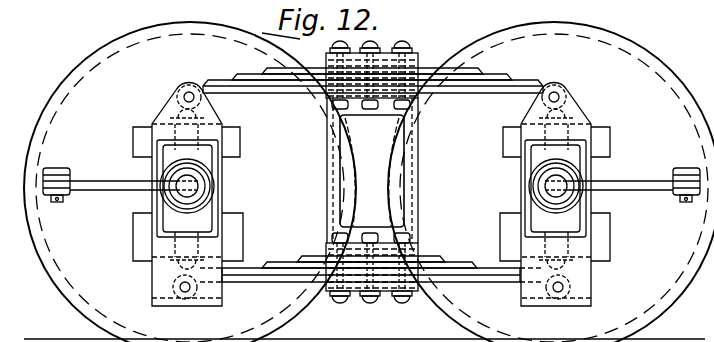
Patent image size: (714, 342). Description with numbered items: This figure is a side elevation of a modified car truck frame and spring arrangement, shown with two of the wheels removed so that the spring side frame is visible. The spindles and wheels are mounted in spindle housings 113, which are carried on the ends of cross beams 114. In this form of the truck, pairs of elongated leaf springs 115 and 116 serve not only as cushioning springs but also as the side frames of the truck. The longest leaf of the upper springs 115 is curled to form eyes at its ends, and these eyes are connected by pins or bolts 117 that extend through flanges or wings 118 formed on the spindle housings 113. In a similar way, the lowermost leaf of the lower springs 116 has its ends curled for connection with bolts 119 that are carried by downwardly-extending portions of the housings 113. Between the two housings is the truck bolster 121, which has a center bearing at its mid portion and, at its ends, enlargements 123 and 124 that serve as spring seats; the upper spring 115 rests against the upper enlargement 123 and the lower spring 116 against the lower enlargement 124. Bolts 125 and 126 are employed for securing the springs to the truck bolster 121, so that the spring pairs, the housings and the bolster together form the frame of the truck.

The spindle housing 113 is at (157, 137).
The cross beam 114 is at (150, 168).
The leaf spring 115 is at (289, 88).
The leaf spring 116 is at (280, 266).
The pin or bolt 117 is at (177, 92).
The flange or wing 118 is at (172, 106).
The bolt 119 is at (180, 287).
The truck bolster 121 is at (407, 178).
The enlargement 123 is at (413, 84).
The enlargement 124 is at (412, 260).
The bolt 125 is at (378, 45).
The bolt 126 is at (349, 301).